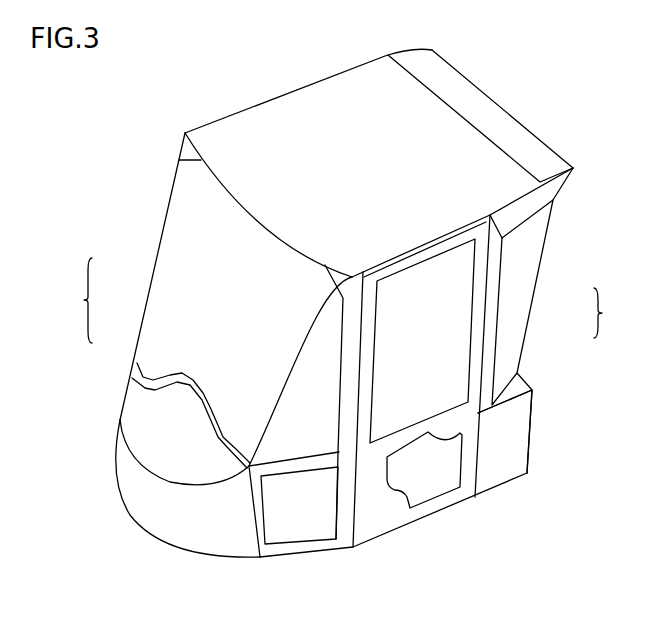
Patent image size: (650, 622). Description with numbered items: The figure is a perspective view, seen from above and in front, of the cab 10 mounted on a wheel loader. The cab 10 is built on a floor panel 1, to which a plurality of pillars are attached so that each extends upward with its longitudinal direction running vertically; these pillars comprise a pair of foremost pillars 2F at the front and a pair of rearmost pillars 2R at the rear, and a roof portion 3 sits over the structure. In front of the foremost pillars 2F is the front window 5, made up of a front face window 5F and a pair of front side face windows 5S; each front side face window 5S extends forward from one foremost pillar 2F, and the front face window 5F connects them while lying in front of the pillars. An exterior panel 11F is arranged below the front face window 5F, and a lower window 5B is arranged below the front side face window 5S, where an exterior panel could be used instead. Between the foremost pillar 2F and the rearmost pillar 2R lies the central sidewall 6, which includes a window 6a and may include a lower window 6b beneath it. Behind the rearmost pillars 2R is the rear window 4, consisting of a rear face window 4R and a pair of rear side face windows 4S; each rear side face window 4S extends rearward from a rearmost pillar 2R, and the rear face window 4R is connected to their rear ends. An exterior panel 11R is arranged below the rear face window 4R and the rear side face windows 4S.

The floor panel 1 is at (288, 558).
The foremost pillar 2F is at (353, 355).
The rearmost pillar 2R is at (492, 285).
The roof portion 3 is at (310, 127).
The rear window 4 is at (604, 313).
The rear face window 4R is at (530, 306).
The rear side face window 4S is at (512, 330).
The front window 5 is at (82, 300).
The front face window 5F is at (198, 280).
The front side face window 5S is at (307, 377).
The lower window 5B is at (308, 507).
The central sidewall 6 is at (427, 372).
The window 6a is at (430, 287).
The lower window 6b is at (432, 477).
The cab 10 is at (507, 93).
The exterior panel 11F is at (150, 500).
The exterior panel 11R is at (532, 432).